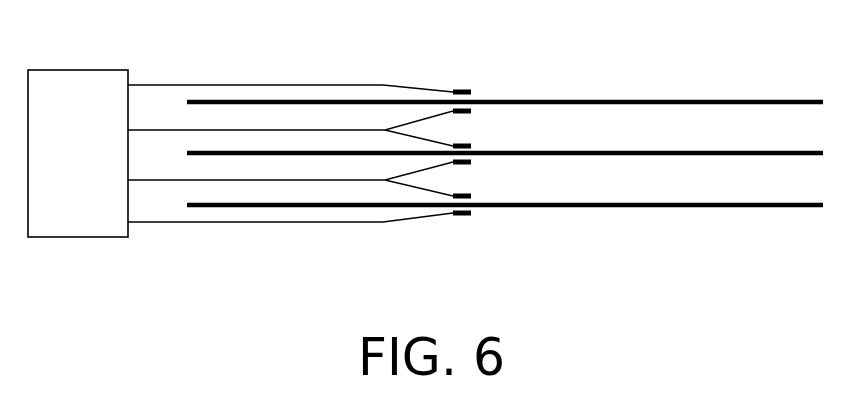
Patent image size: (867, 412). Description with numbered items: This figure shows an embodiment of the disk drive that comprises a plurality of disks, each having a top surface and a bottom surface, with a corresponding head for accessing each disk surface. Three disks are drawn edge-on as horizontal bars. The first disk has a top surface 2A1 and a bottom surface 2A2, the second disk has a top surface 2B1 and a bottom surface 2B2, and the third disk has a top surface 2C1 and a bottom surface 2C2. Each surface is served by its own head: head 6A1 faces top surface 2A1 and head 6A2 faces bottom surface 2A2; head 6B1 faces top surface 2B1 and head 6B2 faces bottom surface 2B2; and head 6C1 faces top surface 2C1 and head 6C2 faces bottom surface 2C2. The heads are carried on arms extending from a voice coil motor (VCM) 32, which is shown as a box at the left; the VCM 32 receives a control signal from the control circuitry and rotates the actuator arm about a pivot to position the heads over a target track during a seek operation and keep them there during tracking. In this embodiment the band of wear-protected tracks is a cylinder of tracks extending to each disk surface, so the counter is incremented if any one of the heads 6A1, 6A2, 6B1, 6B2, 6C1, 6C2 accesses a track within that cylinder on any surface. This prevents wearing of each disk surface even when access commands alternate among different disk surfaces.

The voice coil motor (VCM) 32 is at (74, 69).
The head 6A1 is at (467, 89).
The head 6A2 is at (473, 111).
The head 6B1 is at (473, 146).
The head 6B2 is at (473, 162).
The head 6C1 is at (473, 196).
The head 6C2 is at (473, 215).
The top surface 2A1 is at (592, 100).
The bottom surface 2A2 is at (605, 105).
The top surface 2B1 is at (667, 151).
The bottom surface 2B2 is at (682, 157).
The top surface 2C1 is at (747, 203).
The bottom surface 2C2 is at (762, 208).